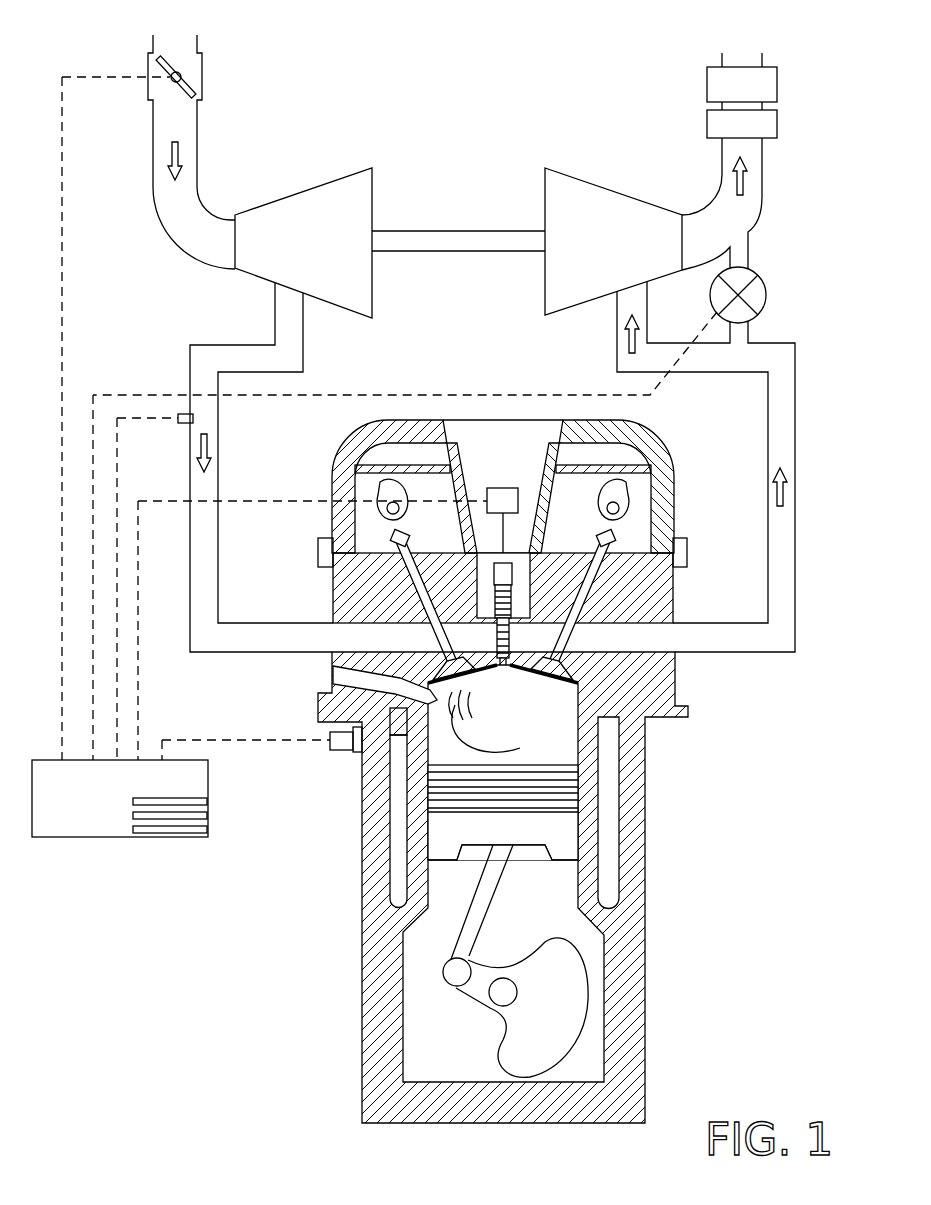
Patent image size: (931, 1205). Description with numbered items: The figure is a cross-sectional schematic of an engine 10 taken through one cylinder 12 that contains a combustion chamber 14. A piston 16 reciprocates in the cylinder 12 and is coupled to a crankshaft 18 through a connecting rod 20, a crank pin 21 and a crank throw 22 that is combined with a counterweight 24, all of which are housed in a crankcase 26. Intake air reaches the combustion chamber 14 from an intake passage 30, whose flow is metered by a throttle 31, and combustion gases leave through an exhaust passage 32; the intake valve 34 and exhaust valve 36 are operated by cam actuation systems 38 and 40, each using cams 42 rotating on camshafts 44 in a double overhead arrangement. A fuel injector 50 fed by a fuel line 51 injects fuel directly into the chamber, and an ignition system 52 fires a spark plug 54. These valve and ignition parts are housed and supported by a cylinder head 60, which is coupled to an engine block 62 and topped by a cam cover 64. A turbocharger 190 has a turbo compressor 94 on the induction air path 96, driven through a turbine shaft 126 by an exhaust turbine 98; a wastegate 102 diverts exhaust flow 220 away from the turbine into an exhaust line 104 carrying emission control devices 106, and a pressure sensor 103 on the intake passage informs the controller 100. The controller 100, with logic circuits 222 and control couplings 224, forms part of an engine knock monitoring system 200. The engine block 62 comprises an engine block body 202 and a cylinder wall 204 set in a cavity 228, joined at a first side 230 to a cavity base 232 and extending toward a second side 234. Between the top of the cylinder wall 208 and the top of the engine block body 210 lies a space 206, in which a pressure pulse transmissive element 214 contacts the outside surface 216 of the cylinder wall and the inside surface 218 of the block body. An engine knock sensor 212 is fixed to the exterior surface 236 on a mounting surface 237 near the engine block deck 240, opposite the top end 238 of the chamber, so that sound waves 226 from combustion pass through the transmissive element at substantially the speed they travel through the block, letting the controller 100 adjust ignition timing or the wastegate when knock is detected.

The engine 10 is at (150, 1040).
The cylinder 12 is at (592, 736).
The combustion chamber 14 is at (529, 732).
The piston 16 is at (526, 837).
The crankshaft 18 is at (503, 978).
The connecting rod 20 is at (458, 920).
The crank pin 21 is at (451, 991).
The crank throw 22 is at (478, 1013).
The counterweight 24 is at (545, 1072).
The crankcase 26 is at (457, 1067).
The intake passage 30 is at (386, 649).
The throttle 31 is at (186, 80).
The exhaust passage 32 is at (747, 649).
The intake valve 34 is at (412, 552).
The exhaust valve 36 is at (597, 552).
The cam actuation system 38 is at (396, 536).
The cam actuation system 40 is at (611, 536).
The cam 42 is at (405, 494).
The camshaft 44 is at (400, 511).
The fuel injector 50 is at (333, 668).
The fuel line 51 is at (335, 690).
The ignition system 52 is at (517, 511).
The spark plug 54 is at (515, 570).
The cylinder head 60 is at (673, 576).
The engine block 62 is at (645, 830).
The cam cover 64 is at (673, 504).
The turbo compressor 94 is at (322, 254).
The induction air path 96 is at (222, 246).
The exhaust turbine 98 is at (614, 254).
The controller 100 is at (107, 826).
The wastegate 102 is at (756, 274).
The pressure sensor 103 is at (186, 423).
The exhaust line 104 is at (722, 166).
The emission control device 106 is at (764, 96).
The turbine shaft 126 is at (375, 231).
The turbocharger 190 is at (408, 56).
The engine knock monitoring system 200 is at (118, 918).
The engine block body 202 is at (362, 970).
The cylinder wall 204 is at (450, 852).
The space 206 is at (650, 724).
The top of the cylinder wall 208 is at (610, 690).
The top of the engine block body 210 is at (648, 694).
The engine knock sensor 212 is at (350, 758).
The pressure pulse transmissive element 214 is at (445, 760).
The outside surface of the cylinder wall 216 is at (392, 720).
The inside surface of the engine block body 218 is at (320, 706).
The exhaust flow 220 is at (762, 186).
The logic circuit 222 is at (208, 822).
The control coupling 224 is at (150, 395).
The sound waves 226 is at (568, 737).
The cavity 228 is at (362, 894).
The first side 230 is at (362, 983).
The cavity base 232 is at (362, 936).
The second side 234 is at (442, 800).
The exterior surface 236 is at (353, 775).
The mounting surface 237 is at (350, 766).
The top end of the combustion chamber 238 is at (500, 684).
The engine block deck 240 is at (395, 712).